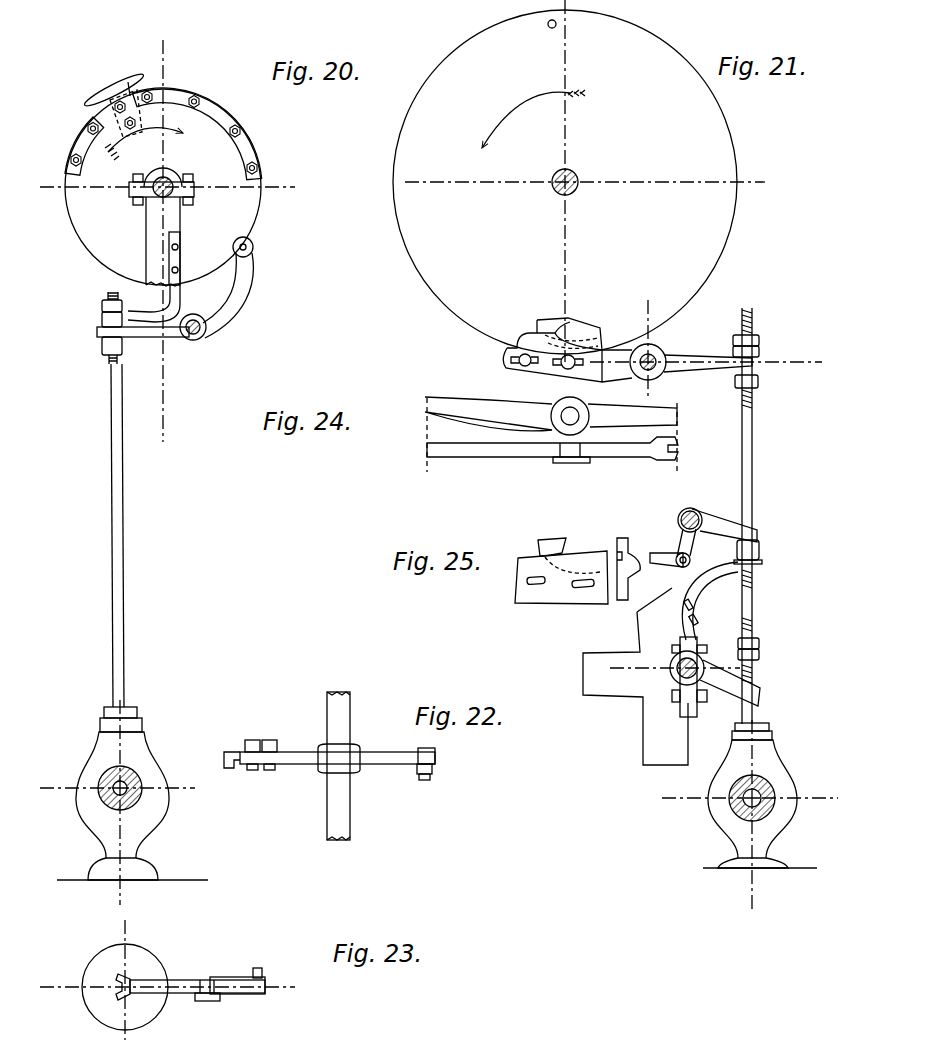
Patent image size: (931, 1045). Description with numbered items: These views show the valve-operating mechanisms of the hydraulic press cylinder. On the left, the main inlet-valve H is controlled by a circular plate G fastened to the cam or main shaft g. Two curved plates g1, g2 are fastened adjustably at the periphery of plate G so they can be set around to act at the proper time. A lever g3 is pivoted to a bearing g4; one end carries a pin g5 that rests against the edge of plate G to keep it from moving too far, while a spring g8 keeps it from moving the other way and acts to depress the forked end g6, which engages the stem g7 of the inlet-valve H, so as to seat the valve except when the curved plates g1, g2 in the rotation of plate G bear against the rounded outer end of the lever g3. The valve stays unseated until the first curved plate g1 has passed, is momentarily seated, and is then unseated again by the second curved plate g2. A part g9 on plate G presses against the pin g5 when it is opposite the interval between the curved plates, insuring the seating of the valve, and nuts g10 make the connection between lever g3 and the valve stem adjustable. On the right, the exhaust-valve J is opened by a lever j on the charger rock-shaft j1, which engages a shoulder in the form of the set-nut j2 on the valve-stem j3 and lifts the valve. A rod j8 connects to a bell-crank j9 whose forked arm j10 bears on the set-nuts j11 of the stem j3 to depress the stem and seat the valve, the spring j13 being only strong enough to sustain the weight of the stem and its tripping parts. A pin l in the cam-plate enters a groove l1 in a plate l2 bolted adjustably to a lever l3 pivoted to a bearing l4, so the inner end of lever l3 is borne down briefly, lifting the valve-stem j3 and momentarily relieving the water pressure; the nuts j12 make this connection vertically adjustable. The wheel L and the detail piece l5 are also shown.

In FIG. 20, the circular plate G is at (246, 207).
In FIG. 20, the cam or main shaft g is at (169, 181).
In FIG. 20, the first curved plate g1 is at (197, 134).
In FIG. 20, the second curved plate g2 is at (75, 146).
In FIG. 20, the lever g3 is at (238, 298).
In FIG. 22, the lever g3 is at (337, 758).
In FIG. 23, the lever g3 is at (228, 978).
In FIG. 20, the bearing g4 is at (207, 333).
In FIG. 20, the pin g5 is at (253, 248).
In FIG. 22, the pin g5 is at (433, 778).
In FIG. 23, the pin g5 is at (259, 968).
In FIG. 20, the forked end of lever g6 is at (96, 332).
In FIG. 23, the forked end of lever g6 is at (129, 980).
In FIG. 20, the main inlet-valve stem g7 is at (110, 448).
In FIG. 20, the spring g8 is at (183, 300).
In FIG. 20, the part on plate G g9 is at (128, 82).
In FIG. 22, the part on plate G g9 is at (224, 752).
In FIG. 20, the nuts g10 is at (101, 303).
In FIG. 20, the main inlet-valve H is at (141, 792).
In FIG. 23, the main inlet-valve H is at (125, 987).
In FIG. 21, the wheel L is at (565, 182).
In FIG. 21, the pin l is at (556, 24).
In FIG. 25, the groove l1 is at (530, 558).
In FIG. 25, the plate l2 is at (562, 541).
In FIG. 21, the plate l2 is at (543, 320).
In FIG. 24, the lever l3 is at (455, 457).
In FIG. 21, the lever l3 is at (622, 378).
In FIG. 21, the bearing l4 is at (656, 356).
In FIG. 24, the curved arm l5 is at (478, 412).
In FIG. 21, the lever j is at (714, 682).
In FIG. 21, the charger rock-shaft j1 is at (699, 650).
In FIG. 21, the set-nut j2 is at (760, 650).
In FIG. 21, the valve-stem j3 is at (754, 596).
In FIG. 21, the rod j8 is at (662, 556).
In FIG. 21, the bell-crank j9 is at (690, 508).
In FIG. 21, the forked arm of bell-crank j10 is at (716, 524).
In FIG. 21, the set-nuts j11 is at (762, 551).
In FIG. 21, the nuts j12 is at (760, 344).
In FIG. 21, the spring j13 is at (710, 601).
In FIG. 21, the exhaust-valve J is at (782, 782).